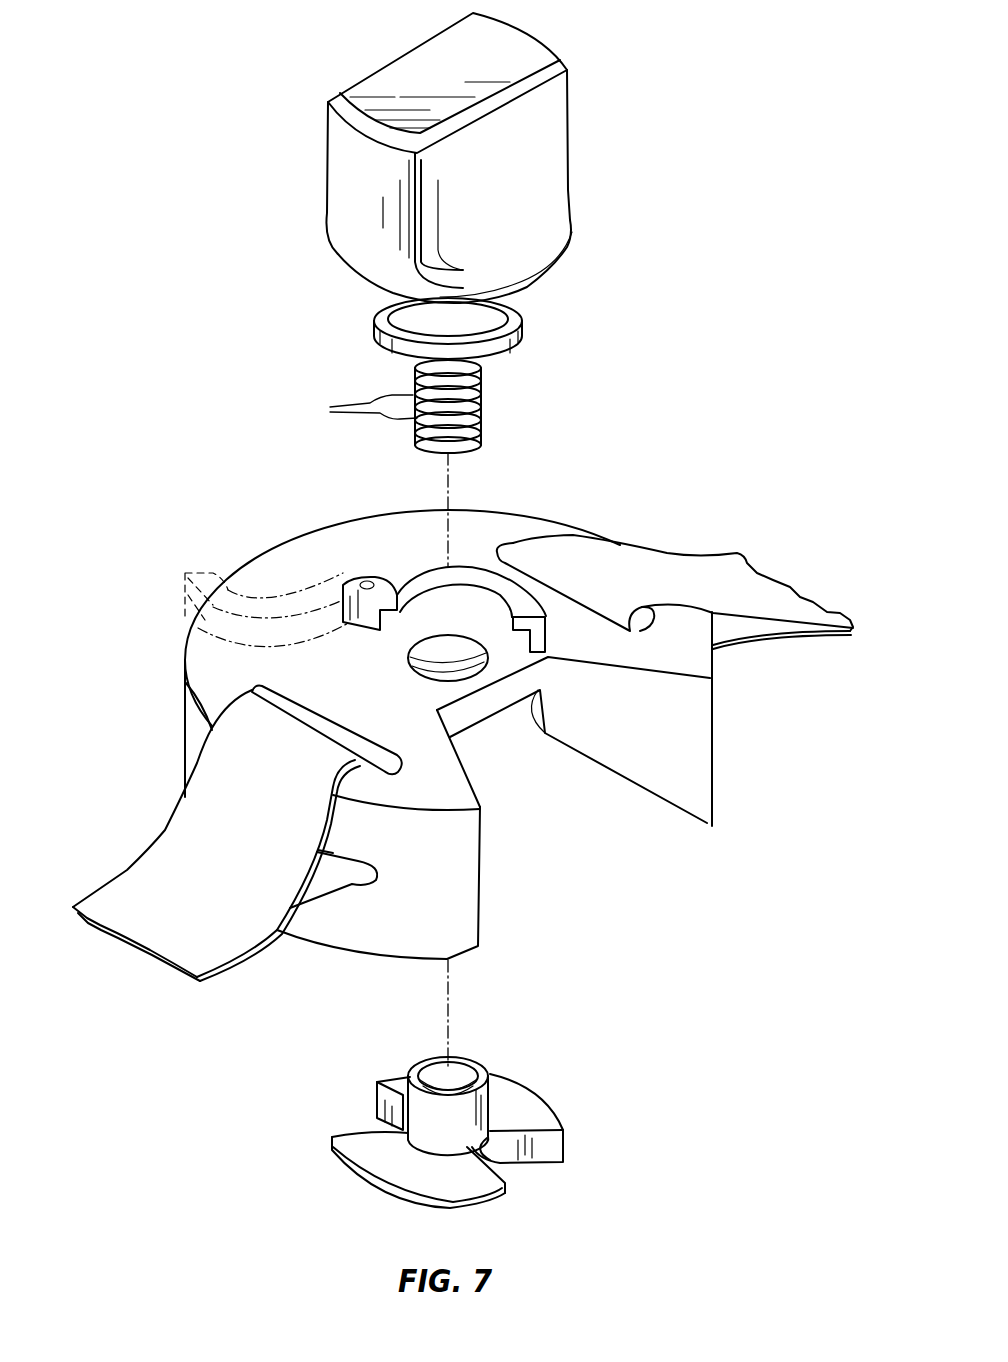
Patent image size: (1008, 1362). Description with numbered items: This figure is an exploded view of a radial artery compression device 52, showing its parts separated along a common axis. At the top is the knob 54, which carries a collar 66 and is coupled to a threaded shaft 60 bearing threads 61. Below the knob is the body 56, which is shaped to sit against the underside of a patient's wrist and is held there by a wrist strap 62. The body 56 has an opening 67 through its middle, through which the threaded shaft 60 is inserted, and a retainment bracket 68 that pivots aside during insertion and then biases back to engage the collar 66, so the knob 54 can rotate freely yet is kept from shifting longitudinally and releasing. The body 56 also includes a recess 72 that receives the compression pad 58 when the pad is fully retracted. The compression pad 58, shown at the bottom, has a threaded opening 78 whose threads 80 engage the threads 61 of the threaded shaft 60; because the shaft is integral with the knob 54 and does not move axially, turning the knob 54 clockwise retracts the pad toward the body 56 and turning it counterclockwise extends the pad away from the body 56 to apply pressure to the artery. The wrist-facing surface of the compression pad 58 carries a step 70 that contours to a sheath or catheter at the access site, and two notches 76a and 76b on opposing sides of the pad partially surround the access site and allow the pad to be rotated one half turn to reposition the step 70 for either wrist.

The radial artery compression device 52 is at (680, 290).
The knob 54 is at (415, 88).
The body 56 is at (270, 572).
The compression pad 58 is at (538, 1103).
The threaded shaft 60 is at (480, 405).
The threads 61 is at (355, 407).
The wrist strap 62 is at (753, 582).
The collar 66 is at (520, 335).
The opening 67 is at (422, 673).
The retainment bracket 68 is at (185, 586).
The step 70 is at (553, 1160).
The recess 72 is at (483, 733).
The notch 76a is at (350, 1118).
The notch 76b is at (527, 1187).
The threaded opening 78 is at (476, 1060).
The threads 80 is at (425, 1060).